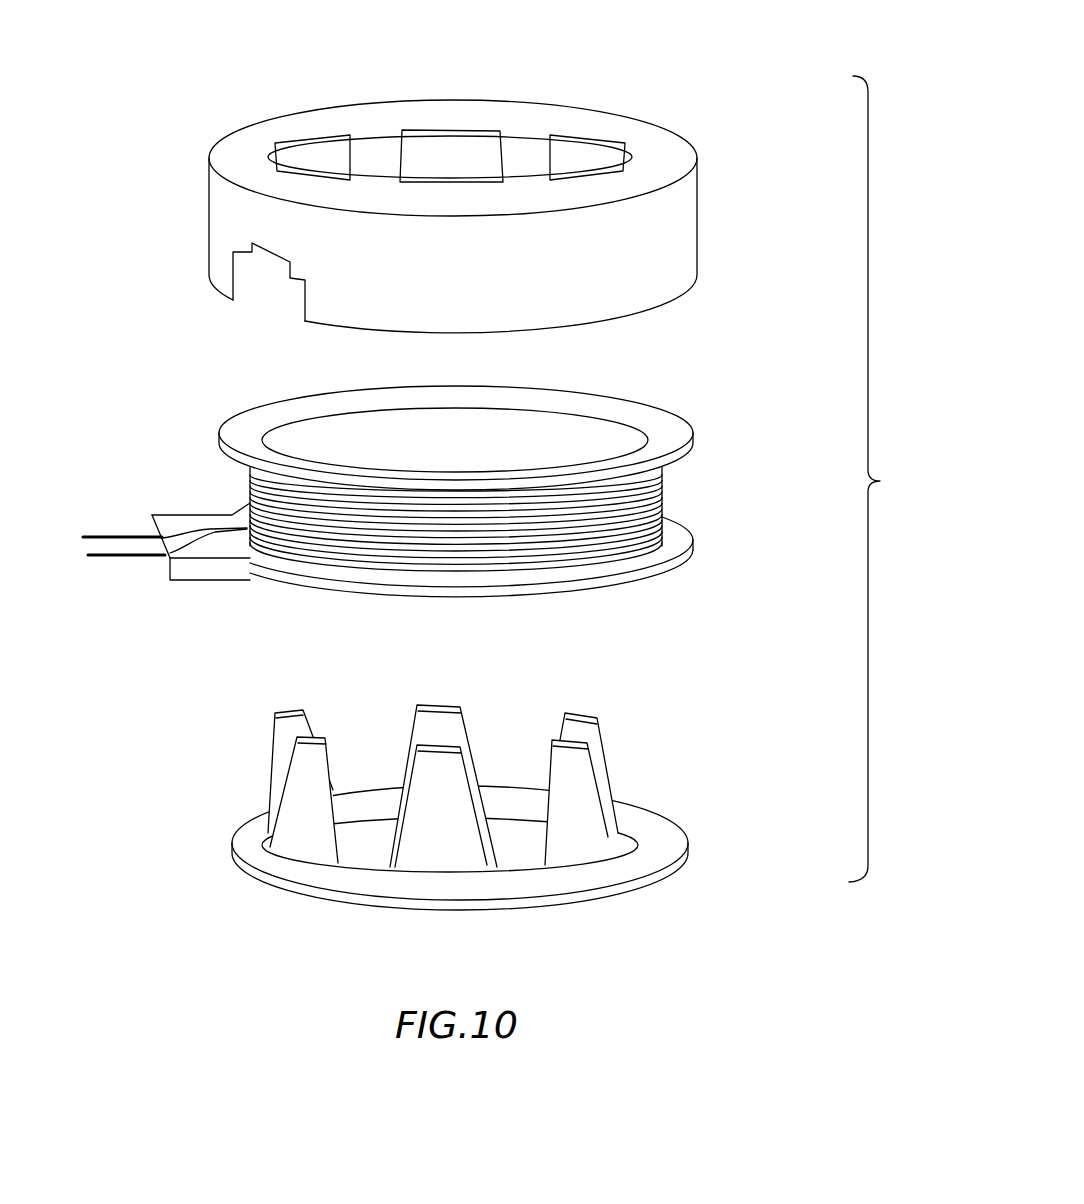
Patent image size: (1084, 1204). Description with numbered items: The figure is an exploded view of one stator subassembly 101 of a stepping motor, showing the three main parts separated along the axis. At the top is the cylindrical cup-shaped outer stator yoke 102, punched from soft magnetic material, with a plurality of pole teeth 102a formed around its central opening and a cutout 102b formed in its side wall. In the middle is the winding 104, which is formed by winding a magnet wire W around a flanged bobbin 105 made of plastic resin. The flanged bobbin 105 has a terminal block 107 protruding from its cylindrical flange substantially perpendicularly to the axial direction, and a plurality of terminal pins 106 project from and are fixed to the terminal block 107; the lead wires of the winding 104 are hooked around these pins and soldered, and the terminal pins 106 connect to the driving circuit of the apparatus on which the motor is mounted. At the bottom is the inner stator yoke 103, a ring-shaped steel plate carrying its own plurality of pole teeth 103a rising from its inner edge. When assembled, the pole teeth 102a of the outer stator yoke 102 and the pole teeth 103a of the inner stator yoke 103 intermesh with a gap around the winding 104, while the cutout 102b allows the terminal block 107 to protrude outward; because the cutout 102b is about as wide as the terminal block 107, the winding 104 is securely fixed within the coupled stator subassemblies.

The stator subassembly 101 is at (934, 497).
The outer stator yoke 102 is at (496, 196).
The pole teeth 102a is at (371, 160).
The cutout 102b is at (271, 252).
The inner stator yoke 103 is at (507, 807).
The pole teeth 103a is at (287, 723).
The winding 104 is at (425, 479).
The flanged bobbin 105 is at (575, 407).
The terminal pins 106 is at (136, 542).
The terminal block 107 is at (185, 513).
The magnet wire W is at (668, 510).